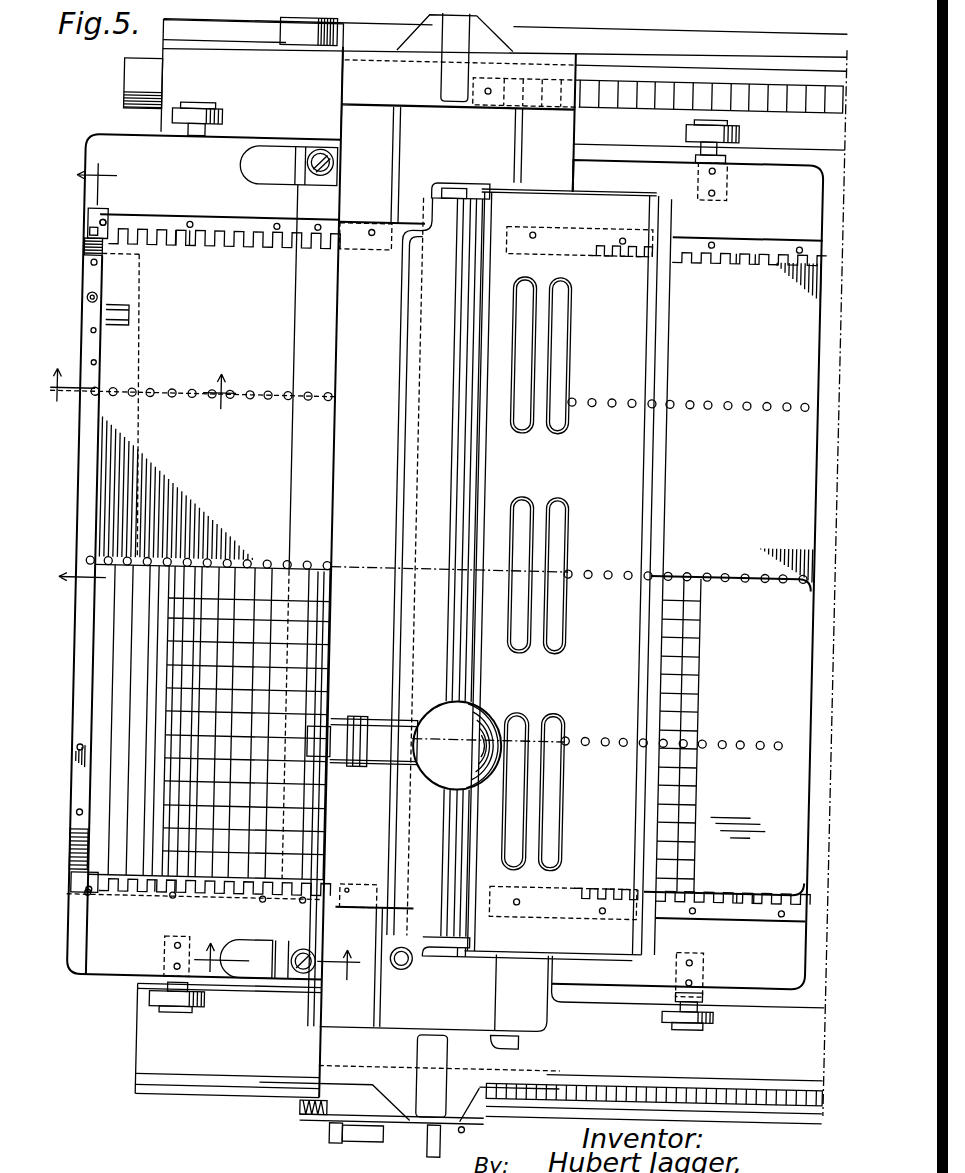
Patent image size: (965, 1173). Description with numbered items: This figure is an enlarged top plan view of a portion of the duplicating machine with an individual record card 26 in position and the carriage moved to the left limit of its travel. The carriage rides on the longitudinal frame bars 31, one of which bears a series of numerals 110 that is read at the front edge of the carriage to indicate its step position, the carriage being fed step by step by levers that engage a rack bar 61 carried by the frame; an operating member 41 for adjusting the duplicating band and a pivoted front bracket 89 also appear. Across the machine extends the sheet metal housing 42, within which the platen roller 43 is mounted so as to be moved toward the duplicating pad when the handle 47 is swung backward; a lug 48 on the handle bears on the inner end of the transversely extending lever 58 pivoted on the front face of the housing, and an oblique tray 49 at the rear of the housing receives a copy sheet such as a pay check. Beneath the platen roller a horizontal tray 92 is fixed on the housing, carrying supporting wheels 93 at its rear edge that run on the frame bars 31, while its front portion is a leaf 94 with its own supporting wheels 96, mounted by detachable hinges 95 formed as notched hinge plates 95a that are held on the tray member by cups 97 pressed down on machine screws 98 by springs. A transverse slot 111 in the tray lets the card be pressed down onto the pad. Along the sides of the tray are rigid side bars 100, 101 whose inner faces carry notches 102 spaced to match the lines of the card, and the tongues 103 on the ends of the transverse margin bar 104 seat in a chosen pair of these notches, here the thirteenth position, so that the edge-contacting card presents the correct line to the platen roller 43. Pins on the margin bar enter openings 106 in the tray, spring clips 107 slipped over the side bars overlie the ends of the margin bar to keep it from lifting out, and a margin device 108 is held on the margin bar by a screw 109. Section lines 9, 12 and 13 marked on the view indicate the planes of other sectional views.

The section line 9- 9 is at (141, 402).
The section line 12- 12 is at (80, 379).
The section line 13- 13 is at (263, 956).
The individual record card 26 is at (734, 588).
The frame bars 31 is at (214, 71).
The operating member 41 is at (130, 91).
The housing 42 is at (346, 335).
The platen roller 43 is at (450, 490).
The handle 47 is at (400, 725).
The lug 48 is at (318, 768).
The tray 49 is at (627, 478).
The lever 58 is at (333, 826).
The rack bar 61 is at (590, 1086).
The bracket 89 is at (415, 1135).
The tray 92 is at (799, 972).
The supporting wheels 93 is at (735, 126).
The leaf 94 is at (115, 509).
The hinges 95 is at (290, 170).
The notched hinge plates 95a is at (295, 154).
The supporting wheels 96 is at (213, 122).
The cups 97 is at (328, 158).
The machine screws 98 is at (315, 156).
The side bar 100 is at (722, 908).
The side bar 101 is at (236, 250).
The notches 102 is at (186, 248).
The tongues 103 is at (82, 255).
The margin bar 104 is at (82, 664).
The openings 106 is at (288, 400).
The spring clips 107 is at (84, 230).
The margin device 108 is at (127, 330).
The screw 109 is at (85, 306).
The series of numerals 110 is at (622, 80).
The transverse slot 111 is at (399, 368).